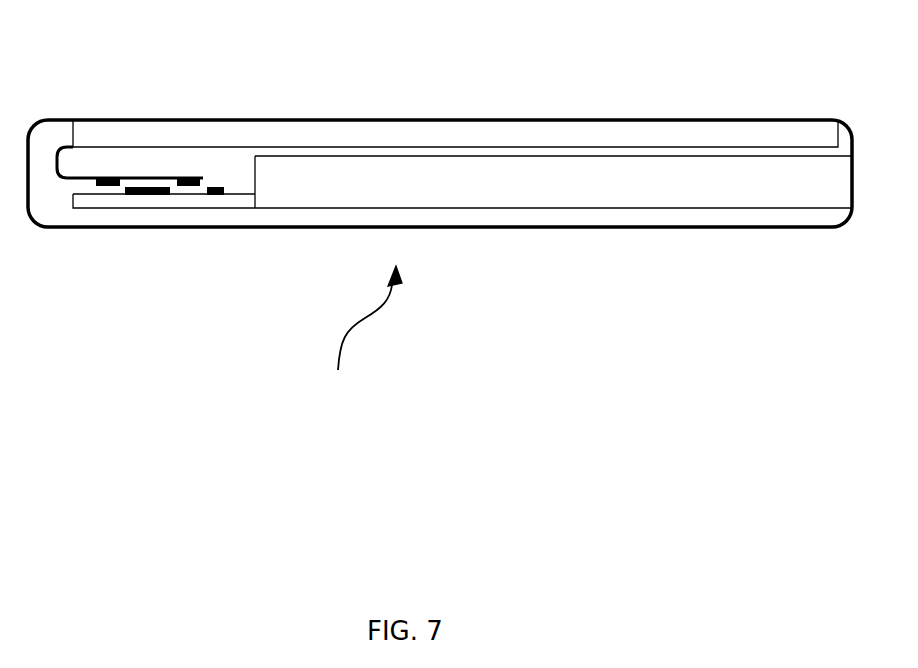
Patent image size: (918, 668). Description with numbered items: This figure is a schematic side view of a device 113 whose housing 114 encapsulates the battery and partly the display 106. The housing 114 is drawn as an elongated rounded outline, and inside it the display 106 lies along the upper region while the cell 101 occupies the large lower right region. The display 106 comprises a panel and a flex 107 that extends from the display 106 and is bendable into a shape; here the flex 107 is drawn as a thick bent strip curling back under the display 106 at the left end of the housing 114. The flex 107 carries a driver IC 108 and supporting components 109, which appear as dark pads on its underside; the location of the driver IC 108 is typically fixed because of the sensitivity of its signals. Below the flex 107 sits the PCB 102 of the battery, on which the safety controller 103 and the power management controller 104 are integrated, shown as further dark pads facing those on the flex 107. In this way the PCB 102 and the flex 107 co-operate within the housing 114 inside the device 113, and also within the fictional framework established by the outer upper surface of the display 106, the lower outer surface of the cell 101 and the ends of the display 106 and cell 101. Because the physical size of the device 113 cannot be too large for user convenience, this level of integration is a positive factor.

The cell 101 is at (568, 190).
The PCB 102 is at (243, 207).
The safety controller 103 is at (223, 195).
The power management controller 104 is at (142, 195).
The display 106 is at (303, 135).
The flex 107 is at (62, 177).
The driver IC 108 is at (108, 178).
The supporting components 109 is at (180, 178).
The device 113 is at (365, 333).
The housing 114 is at (505, 227).